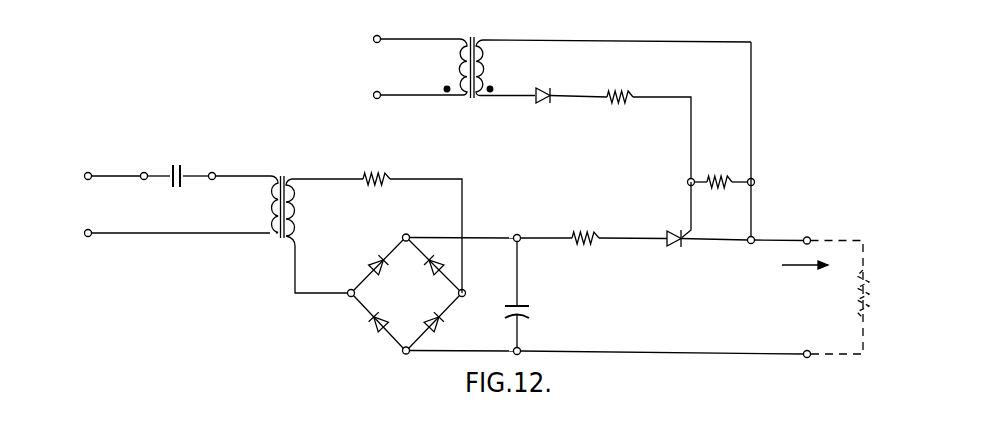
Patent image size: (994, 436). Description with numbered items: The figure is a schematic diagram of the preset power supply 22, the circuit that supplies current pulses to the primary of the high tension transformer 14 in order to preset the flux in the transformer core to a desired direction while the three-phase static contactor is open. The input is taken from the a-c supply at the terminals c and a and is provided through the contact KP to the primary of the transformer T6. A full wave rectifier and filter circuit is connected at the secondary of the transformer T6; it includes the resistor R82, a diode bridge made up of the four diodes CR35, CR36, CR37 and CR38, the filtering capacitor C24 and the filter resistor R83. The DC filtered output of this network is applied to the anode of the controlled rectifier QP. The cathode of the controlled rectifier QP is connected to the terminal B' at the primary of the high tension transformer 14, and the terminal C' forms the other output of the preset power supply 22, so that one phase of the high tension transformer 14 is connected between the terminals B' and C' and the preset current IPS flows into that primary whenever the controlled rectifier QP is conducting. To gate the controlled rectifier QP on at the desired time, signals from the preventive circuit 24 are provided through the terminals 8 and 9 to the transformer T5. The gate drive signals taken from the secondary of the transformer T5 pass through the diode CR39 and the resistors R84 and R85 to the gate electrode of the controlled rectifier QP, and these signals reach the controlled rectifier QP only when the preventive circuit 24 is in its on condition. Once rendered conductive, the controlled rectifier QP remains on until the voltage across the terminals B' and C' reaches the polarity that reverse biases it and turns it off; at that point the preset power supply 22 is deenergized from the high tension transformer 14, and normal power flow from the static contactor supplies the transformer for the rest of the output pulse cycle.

The preset power supply 22 is at (165, 122).
The preventive circuit 24 is at (297, 64).
The a-c input terminal c is at (106, 176).
The a-c input terminal a is at (171, 233).
The contact KP is at (176, 190).
The transformer T6 is at (283, 170).
The resistor R82 is at (382, 170).
The diode CR35 is at (369, 262).
The diode CR36 is at (434, 272).
The diode CR37 is at (370, 324).
The diode CR38 is at (444, 327).
The filter resistor R83 is at (577, 218).
The controlled rectifier QP is at (678, 228).
The terminal B' is at (806, 228).
The terminal C' is at (807, 364).
The high tension transformer 14 is at (857, 304).
The preset power supply current IPS is at (805, 276).
The filtering capacitor C24 is at (527, 317).
The terminal 8 is at (376, 28).
The terminal 9 is at (376, 108).
The transformer T5 is at (468, 102).
The diode CR39 is at (544, 101).
The resistor R84 is at (627, 106).
The resistor R85 is at (719, 175).